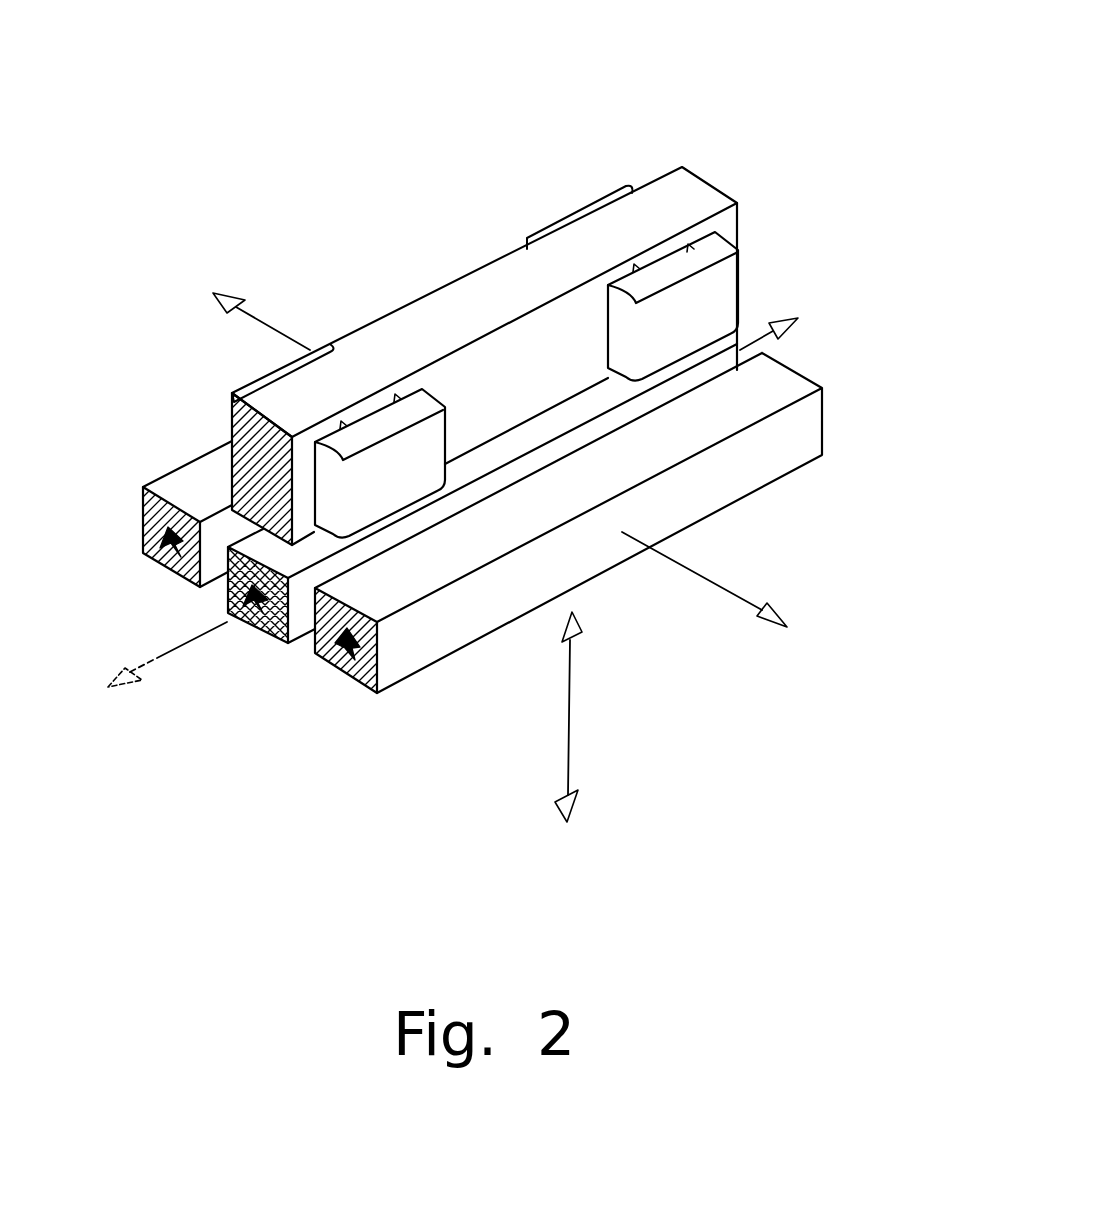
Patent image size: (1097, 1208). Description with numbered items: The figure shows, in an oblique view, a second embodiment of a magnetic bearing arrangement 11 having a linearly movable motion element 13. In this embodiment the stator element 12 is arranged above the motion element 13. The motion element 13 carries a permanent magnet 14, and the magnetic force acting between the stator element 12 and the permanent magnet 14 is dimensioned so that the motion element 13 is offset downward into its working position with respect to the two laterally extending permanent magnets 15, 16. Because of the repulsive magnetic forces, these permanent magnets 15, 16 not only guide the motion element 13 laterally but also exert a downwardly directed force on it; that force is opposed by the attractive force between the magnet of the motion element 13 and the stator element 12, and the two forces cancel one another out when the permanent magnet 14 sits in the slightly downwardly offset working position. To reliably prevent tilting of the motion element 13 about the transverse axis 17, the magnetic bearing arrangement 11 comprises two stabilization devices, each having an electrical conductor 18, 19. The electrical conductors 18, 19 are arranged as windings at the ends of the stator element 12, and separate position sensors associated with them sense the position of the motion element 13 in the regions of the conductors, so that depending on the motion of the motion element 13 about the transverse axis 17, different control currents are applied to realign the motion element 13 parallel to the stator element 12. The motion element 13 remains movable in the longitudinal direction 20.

The magnetic bearing arrangement 11 is at (790, 92).
The stator element 12 is at (660, 185).
The motion element 13 is at (748, 322).
The permanent magnet 14 is at (298, 630).
The permanent magnet 15 is at (190, 473).
The permanent magnet 16 is at (785, 388).
The transverse axis 17 is at (725, 588).
The electrical conductor 18 is at (330, 348).
The electrical conductor 19 is at (590, 197).
The longitudinal direction 20 is at (170, 658).